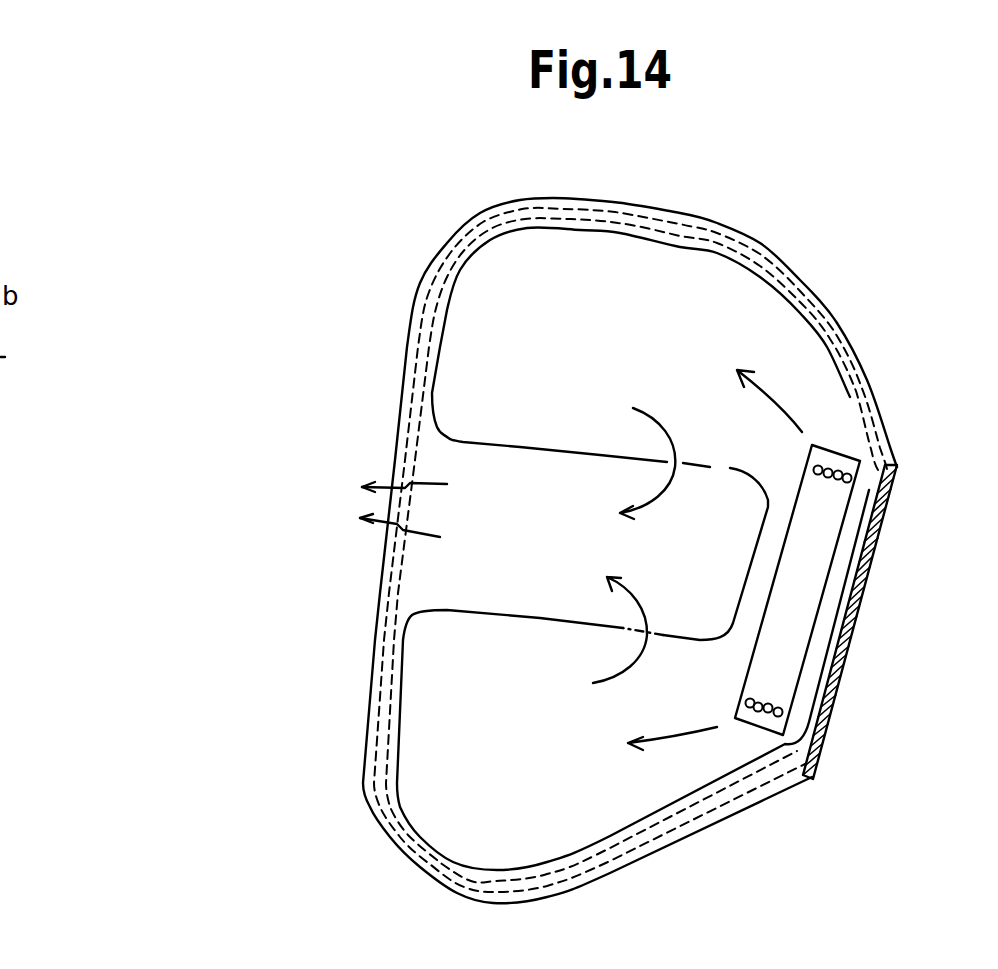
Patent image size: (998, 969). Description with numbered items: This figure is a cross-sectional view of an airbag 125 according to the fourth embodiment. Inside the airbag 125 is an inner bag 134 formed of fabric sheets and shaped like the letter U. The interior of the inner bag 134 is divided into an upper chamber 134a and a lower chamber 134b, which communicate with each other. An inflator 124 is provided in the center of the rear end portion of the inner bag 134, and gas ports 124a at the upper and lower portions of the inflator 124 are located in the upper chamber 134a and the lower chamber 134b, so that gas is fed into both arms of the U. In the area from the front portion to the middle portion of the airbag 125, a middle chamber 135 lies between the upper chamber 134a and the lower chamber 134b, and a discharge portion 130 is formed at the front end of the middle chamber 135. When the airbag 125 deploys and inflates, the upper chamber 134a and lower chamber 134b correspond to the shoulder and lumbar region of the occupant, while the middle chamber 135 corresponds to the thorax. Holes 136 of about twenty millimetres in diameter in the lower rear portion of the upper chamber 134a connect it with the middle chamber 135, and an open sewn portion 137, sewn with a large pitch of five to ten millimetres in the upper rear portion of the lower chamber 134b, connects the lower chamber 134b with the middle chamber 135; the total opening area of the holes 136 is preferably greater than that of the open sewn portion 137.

The inflator 124 is at (810, 573).
The gas ports 124a is at (840, 482).
The airbag 125 is at (479, 224).
The discharge portion 130 is at (405, 463).
The inner bag 134 is at (617, 240).
The upper chamber 134a is at (475, 306).
The lower chamber 134b is at (440, 741).
The middle chamber 135 is at (547, 537).
The holes 136 is at (723, 487).
The open sewn portion 137 is at (690, 612).